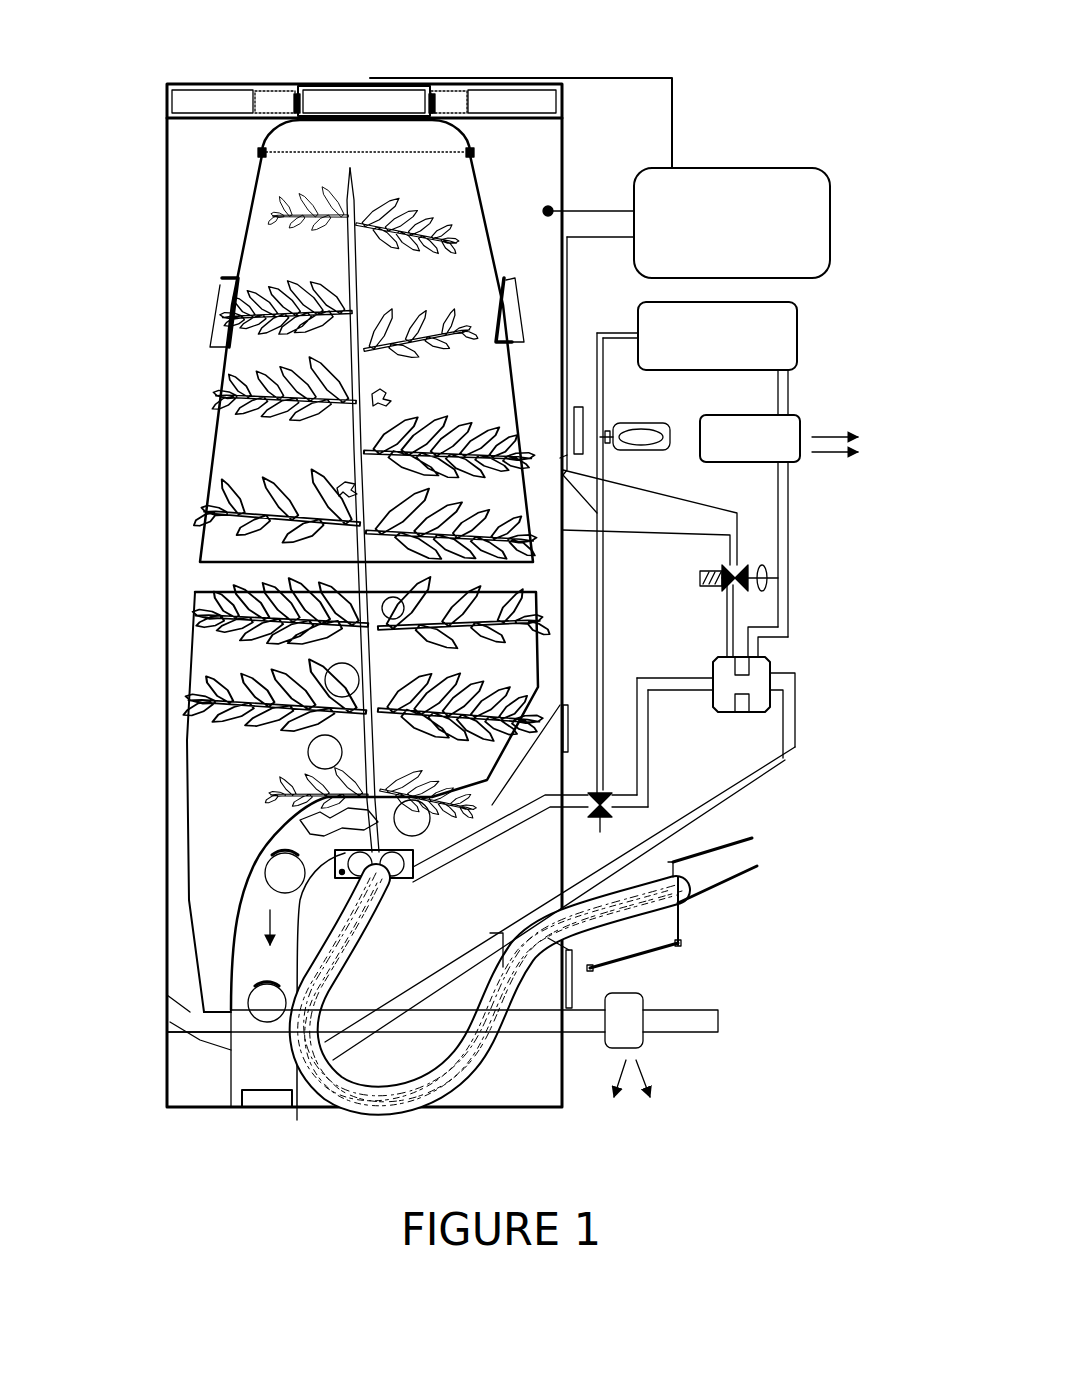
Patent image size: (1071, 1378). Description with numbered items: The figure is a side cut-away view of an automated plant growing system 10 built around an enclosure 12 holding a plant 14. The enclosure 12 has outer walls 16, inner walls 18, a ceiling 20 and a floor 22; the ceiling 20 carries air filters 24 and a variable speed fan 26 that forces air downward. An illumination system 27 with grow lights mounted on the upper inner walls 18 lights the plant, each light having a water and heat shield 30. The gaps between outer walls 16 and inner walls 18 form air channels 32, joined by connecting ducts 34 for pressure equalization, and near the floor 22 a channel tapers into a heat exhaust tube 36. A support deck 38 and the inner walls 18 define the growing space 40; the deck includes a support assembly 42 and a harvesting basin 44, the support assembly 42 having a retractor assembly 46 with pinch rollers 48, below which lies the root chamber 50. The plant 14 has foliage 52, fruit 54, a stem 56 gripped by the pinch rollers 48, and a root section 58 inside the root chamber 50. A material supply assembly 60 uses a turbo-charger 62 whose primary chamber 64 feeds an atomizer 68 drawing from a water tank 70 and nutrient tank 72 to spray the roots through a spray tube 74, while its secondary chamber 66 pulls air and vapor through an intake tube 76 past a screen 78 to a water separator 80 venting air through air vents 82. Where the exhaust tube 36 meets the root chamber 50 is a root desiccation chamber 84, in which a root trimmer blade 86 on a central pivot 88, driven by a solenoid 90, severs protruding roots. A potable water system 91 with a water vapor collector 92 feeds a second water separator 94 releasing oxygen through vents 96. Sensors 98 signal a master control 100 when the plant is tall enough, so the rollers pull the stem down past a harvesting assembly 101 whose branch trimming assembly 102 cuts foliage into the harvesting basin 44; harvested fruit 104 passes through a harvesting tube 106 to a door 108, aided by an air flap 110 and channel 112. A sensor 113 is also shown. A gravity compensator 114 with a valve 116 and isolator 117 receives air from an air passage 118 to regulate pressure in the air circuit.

The plant growing system 10 is at (866, 95).
The enclosure 12 is at (582, 93).
The plant 14 is at (298, 214).
The outer walls 16 is at (168, 236).
The inner walls 18 is at (240, 242).
The ceiling 20 is at (296, 92).
The floor 22 is at (497, 1108).
The air filters 24 is at (210, 100).
The variable speed fan 26 is at (352, 100).
The illumination system 27 is at (220, 292).
The water and heat shield 30 is at (222, 340).
The air channels 32 is at (364, 154).
The connecting ducts 34 is at (220, 570).
The heat exhaust tube 36 is at (222, 1052).
The support deck 38 is at (215, 852).
The growing space 40 is at (240, 462).
The support assembly 42 is at (348, 880).
The harvesting basin 44 is at (355, 850).
The retractor assembly 46 is at (343, 853).
The pinch rollers 48 is at (500, 838).
The root chamber 50 is at (330, 1107).
The foliage 52 is at (225, 704).
The fruit 54 is at (345, 680).
The stem 56 is at (380, 808).
The root section 58 is at (370, 955).
The material supply assembly 60 is at (820, 543).
The turbo-charger 62 is at (735, 713).
The primary chamber 64 is at (713, 660).
The secondary chamber 66 is at (772, 668).
The atomizer 68 is at (611, 829).
The water tank 70 is at (697, 358).
The nutrient tank 72 is at (650, 438).
The spray tube 74 is at (448, 860).
The intake tube 76 is at (790, 760).
The screen 78 is at (503, 967).
The water separator 80 is at (750, 536).
The air vents 82 is at (808, 460).
The root desiccation chamber 84 is at (703, 863).
The root trimmer blade 86 is at (680, 943).
The central pivot 88 is at (612, 950).
The solenoid 90 is at (575, 990).
The potable water system 91 is at (196, 918).
The water vapor collector 92 is at (212, 933).
The second water separator 94 is at (610, 1040).
The vents 96 is at (642, 1052).
The sensors 98 is at (266, 158).
The master control 100 is at (698, 223).
The harvesting assembly 101 is at (358, 835).
The branch trimming assembly 102 is at (300, 815).
The harvested fruit 104 is at (265, 1003).
The harvesting tube 106 is at (250, 905).
The door 108 is at (282, 1108).
The air flap 110 is at (543, 690).
The channel 112 is at (522, 780).
The sensor 113 is at (552, 208).
The gravity compensator 114 is at (700, 580).
The valve 116 is at (728, 572).
The isolator 117 is at (762, 565).
The air passage 118 is at (637, 515).